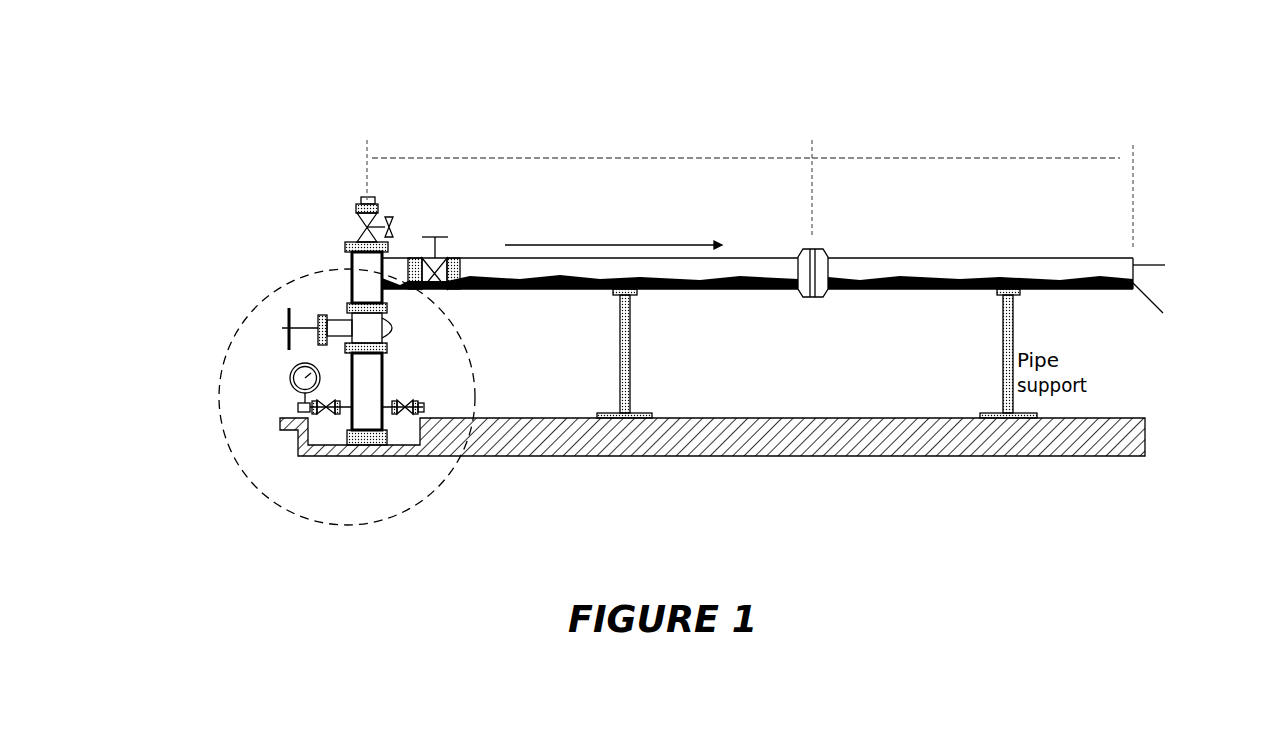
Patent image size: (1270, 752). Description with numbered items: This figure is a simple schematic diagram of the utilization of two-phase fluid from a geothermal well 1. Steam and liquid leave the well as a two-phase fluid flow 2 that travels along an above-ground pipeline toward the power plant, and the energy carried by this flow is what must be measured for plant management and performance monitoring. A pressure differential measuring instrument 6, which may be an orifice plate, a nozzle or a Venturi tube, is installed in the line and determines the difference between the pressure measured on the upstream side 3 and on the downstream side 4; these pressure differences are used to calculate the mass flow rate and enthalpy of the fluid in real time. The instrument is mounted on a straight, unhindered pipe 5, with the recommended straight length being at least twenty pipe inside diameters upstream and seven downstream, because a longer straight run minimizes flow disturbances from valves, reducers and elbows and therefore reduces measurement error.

The geothermal well 1 is at (228, 445).
The two-phase fluid flow 2 is at (550, 213).
The upstream side 3 is at (611, 125).
The downstream side 4 is at (969, 127).
The straight pipe 5 is at (1088, 257).
The pressure differential measuring instrument 6 is at (815, 353).